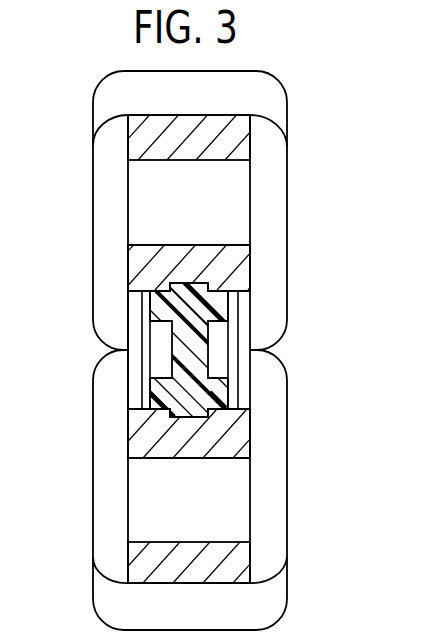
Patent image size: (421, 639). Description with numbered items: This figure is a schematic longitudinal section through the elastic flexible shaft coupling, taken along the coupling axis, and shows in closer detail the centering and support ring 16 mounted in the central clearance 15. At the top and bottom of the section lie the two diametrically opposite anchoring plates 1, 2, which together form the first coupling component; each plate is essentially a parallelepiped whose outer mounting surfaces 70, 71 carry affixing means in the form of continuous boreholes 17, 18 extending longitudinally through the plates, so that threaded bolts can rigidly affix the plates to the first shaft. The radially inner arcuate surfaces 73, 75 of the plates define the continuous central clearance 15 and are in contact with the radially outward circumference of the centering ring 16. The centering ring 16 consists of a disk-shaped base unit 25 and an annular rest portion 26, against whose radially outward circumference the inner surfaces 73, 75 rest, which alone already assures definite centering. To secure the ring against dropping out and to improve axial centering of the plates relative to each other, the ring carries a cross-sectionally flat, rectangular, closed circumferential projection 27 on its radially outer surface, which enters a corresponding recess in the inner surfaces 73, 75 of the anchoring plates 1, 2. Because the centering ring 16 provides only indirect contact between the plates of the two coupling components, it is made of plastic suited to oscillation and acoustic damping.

The anchoring plate 1 is at (235, 138).
The anchoring plate 2 is at (238, 571).
The central clearance 15 is at (231, 307).
The centering ring 16 is at (126, 382).
The continuous borehole 17 is at (217, 162).
The continuous borehole 18 is at (177, 538).
The disk-shaped base unit 25 is at (192, 350).
The annular rest portion 26 is at (142, 308).
The circumferential projection 27 is at (186, 426).
The outer mounting surface 70 is at (251, 450).
The outer mounting surface 71 is at (130, 440).
The inner arcuate surface 73 is at (137, 290).
The inner arcuate surface 75 is at (237, 408).